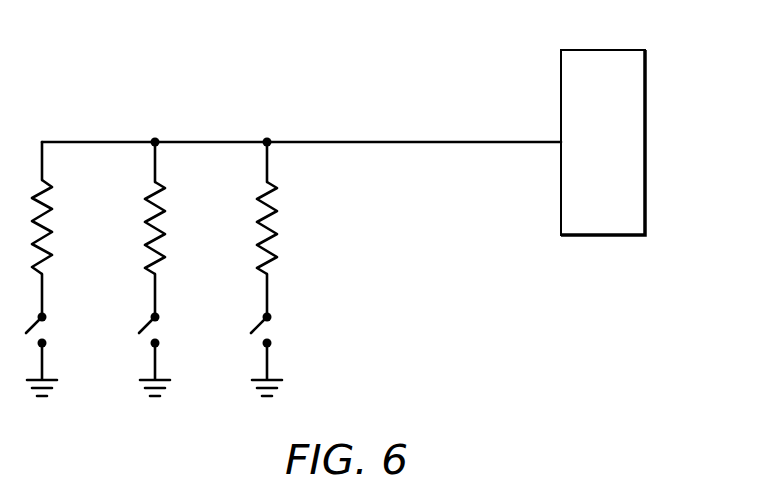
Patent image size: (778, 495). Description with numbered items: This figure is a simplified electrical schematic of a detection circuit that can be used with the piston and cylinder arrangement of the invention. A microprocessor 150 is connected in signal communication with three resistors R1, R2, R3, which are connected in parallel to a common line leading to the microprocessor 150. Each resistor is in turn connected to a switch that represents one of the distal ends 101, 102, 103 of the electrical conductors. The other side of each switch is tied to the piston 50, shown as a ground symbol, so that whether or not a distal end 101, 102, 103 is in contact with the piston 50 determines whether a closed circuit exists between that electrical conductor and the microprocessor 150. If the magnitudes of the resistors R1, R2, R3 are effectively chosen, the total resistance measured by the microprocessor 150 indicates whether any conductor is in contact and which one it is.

The microprocessor 150 is at (633, 115).
The first resistor R1 is at (48, 225).
The second resistor R2 is at (161, 225).
The third resistor R3 is at (273, 225).
The distal end of electrical conductor 101 is at (72, 304).
The distal end of electrical conductor 102 is at (185, 304).
The distal end of electrical conductor 103 is at (297, 304).
The piston 50 is at (44, 366).